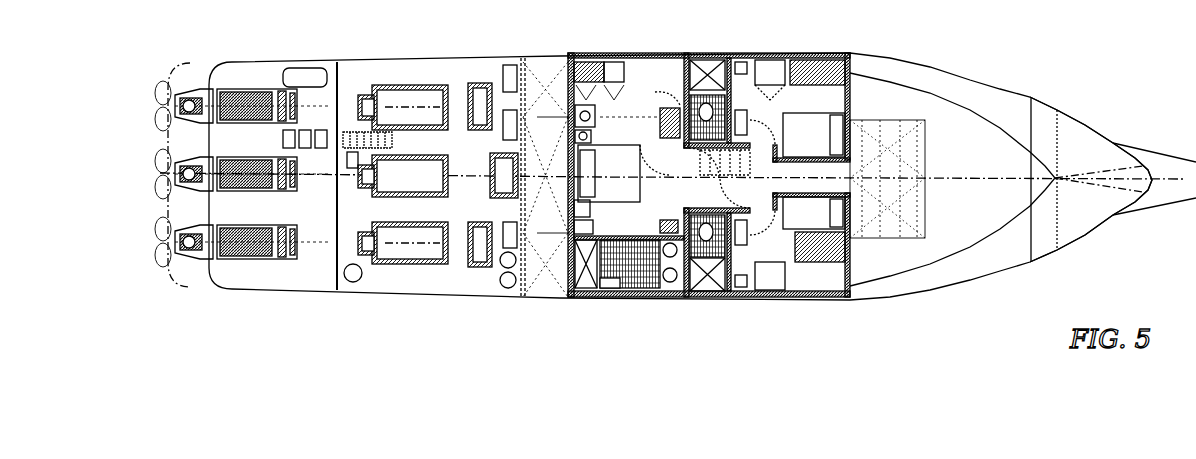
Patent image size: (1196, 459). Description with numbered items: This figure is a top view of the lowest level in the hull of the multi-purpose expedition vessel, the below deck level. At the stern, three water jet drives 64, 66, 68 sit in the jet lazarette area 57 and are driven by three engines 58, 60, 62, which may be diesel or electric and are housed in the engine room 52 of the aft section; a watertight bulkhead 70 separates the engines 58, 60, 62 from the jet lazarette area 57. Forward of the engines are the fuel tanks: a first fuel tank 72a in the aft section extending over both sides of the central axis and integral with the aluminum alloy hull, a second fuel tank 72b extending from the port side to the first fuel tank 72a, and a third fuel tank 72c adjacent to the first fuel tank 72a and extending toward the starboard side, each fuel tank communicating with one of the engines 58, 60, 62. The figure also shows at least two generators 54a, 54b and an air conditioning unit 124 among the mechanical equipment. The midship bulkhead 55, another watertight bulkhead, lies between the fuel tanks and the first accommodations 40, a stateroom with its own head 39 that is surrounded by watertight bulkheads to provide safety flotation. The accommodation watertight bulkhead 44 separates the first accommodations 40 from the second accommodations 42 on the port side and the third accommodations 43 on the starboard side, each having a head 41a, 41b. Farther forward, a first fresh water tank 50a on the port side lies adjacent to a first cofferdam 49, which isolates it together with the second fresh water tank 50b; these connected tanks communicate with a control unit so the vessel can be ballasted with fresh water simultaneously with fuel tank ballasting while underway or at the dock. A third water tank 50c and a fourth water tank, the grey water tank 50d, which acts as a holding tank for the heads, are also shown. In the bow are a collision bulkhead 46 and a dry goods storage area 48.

The head 39 is at (632, 270).
The first accommodations 40 is at (623, 105).
The head 41a is at (700, 105).
The head 41b is at (700, 248).
The second accommodations 42 is at (797, 115).
The third accommodations 43 is at (785, 245).
The accommodation watertight bulkhead 44 is at (690, 262).
The collision bulkhead 46 is at (1045, 148).
The dry goods storage area 48 is at (952, 167).
The first cofferdam 49 is at (887, 210).
The first fresh water tank 50a is at (863, 150).
The second fresh water tank 50b is at (865, 210).
The third water tank 50c is at (910, 210).
The grey water tank 50d is at (912, 150).
The engine room 52 is at (378, 270).
The generator 54a is at (478, 85).
The generator 54b is at (480, 268).
The midship bulkhead 55 is at (570, 75).
The jet lazarette area 57 is at (287, 268).
The engine 58 is at (400, 85).
The engine 60 is at (383, 196).
The engine 62 is at (420, 265).
The water jet drive 64 is at (193, 90).
The water jet drive 66 is at (167, 182).
The water jet drive 68 is at (193, 258).
The watertight bulkhead 70 is at (337, 66).
The first fuel tank 72a is at (543, 175).
The second fuel tank 72b is at (546, 85).
The third fuel tank 72c is at (540, 262).
The air conditioning unit 124 is at (492, 153).